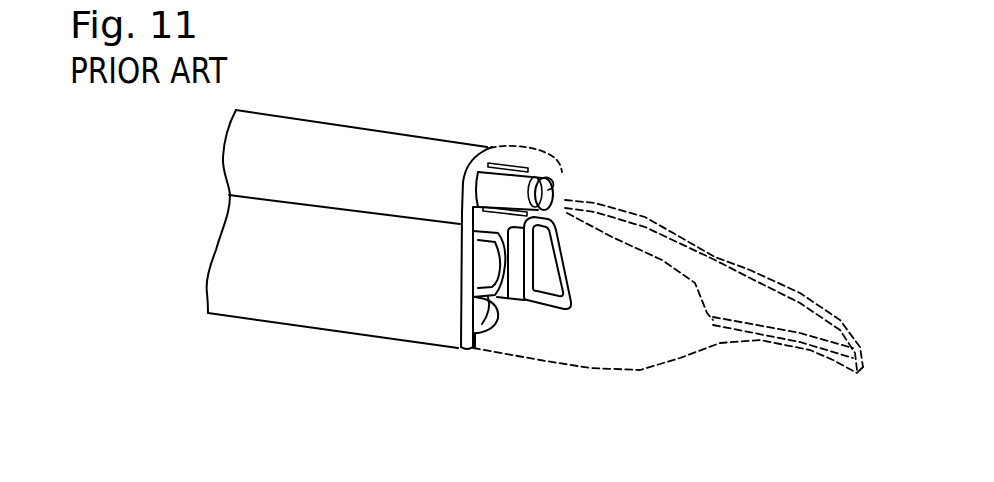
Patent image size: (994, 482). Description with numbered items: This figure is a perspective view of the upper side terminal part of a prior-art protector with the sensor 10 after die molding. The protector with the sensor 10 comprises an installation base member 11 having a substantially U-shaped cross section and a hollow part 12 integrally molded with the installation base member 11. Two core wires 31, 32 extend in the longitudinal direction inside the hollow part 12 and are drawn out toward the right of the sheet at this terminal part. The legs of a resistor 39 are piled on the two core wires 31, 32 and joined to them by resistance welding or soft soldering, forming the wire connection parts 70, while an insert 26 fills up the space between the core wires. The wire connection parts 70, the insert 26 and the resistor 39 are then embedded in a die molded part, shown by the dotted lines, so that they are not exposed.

The protector with the sensor 10 is at (347, 259).
The installation base member 11 is at (420, 322).
The hollow part 12 is at (428, 153).
The insert 26 is at (559, 146).
The core wire 31 is at (500, 160).
The core wire 32 is at (489, 219).
The resistor 39 is at (555, 198).
The wire connection parts 70 is at (520, 167).